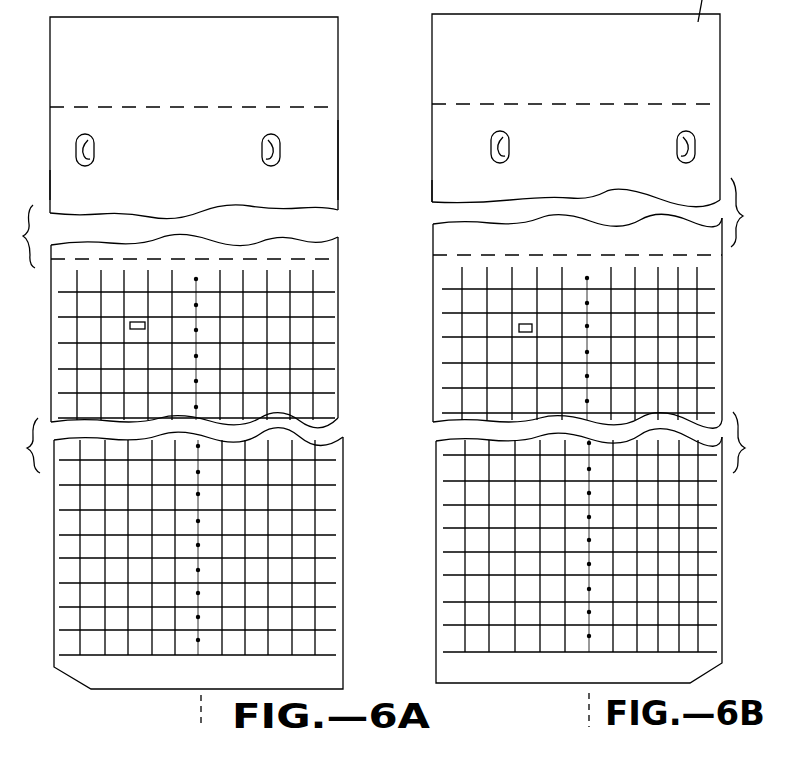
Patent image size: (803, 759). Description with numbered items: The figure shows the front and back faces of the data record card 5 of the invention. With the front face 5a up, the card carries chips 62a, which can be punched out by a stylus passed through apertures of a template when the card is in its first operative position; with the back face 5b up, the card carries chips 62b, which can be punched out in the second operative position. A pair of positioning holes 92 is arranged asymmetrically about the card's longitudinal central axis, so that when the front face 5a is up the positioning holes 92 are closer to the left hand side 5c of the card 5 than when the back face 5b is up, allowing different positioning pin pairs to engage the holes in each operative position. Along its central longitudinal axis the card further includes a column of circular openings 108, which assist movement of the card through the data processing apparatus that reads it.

In FIG. 6A, the data record card 5 is at (328, 65).
In FIG. 6A, the front face 5a is at (330, 152).
In FIG. 6B, the back face 5b is at (707, 157).
In FIG. 6A, the left hand side 5c is at (60, 178).
In FIG. 6B, the left hand side 5c is at (441, 193).
In FIG. 6A, the positioning holes 92 is at (94, 140).
In FIG. 6B, the positioning holes 92 is at (509, 137).
In FIG. 6A, the circular openings 108 is at (197, 279).
In FIG. 6B, the circular openings 108 is at (588, 278).
In FIG. 6A, the chips 62a is at (130, 328).
In FIG. 6B, the chips 62b is at (519, 330).